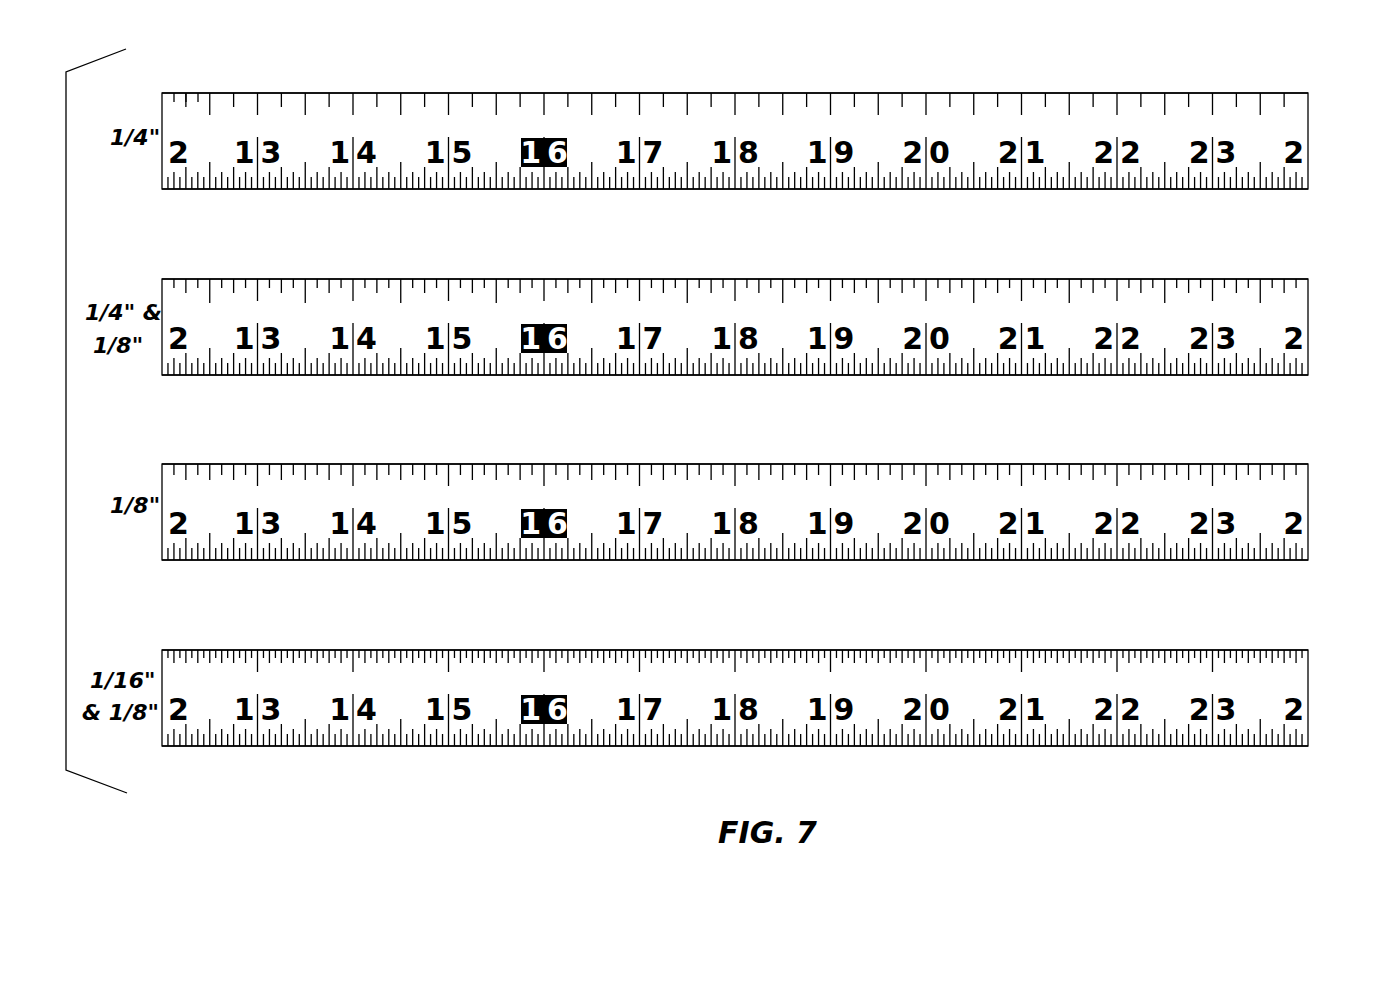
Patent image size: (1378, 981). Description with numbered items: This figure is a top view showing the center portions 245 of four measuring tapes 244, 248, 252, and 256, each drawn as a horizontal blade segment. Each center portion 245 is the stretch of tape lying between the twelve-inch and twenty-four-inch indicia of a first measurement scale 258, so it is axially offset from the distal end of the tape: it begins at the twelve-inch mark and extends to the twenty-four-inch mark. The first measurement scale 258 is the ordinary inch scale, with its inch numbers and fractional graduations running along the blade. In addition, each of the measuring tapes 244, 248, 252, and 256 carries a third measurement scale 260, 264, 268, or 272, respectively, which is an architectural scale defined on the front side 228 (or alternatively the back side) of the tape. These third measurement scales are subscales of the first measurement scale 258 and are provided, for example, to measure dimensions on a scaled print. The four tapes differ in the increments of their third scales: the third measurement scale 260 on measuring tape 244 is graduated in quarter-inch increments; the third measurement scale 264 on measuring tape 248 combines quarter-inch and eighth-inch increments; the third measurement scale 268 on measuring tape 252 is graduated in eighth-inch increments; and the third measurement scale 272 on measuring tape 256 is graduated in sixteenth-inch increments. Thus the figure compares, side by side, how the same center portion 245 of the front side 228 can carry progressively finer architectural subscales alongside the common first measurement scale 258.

The front side 228 is at (761, 395).
The measuring tape 244 is at (761, 118).
The center portion 245 is at (630, 103).
The measuring tape 248 is at (761, 304).
The measuring tape 252 is at (761, 489).
The measuring tape 256 is at (761, 675).
The first measurement scale 258 is at (1025, 189).
The third measurement scale 260 is at (260, 93).
The third measurement scale 264 is at (260, 279).
The third measurement scale 268 is at (260, 464).
The third measurement scale 272 is at (260, 650).